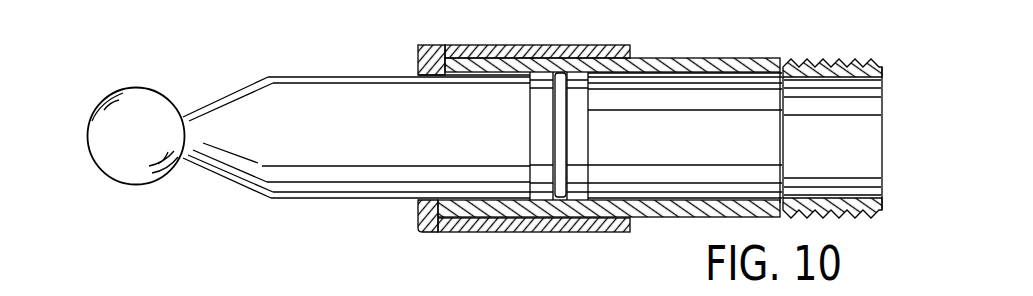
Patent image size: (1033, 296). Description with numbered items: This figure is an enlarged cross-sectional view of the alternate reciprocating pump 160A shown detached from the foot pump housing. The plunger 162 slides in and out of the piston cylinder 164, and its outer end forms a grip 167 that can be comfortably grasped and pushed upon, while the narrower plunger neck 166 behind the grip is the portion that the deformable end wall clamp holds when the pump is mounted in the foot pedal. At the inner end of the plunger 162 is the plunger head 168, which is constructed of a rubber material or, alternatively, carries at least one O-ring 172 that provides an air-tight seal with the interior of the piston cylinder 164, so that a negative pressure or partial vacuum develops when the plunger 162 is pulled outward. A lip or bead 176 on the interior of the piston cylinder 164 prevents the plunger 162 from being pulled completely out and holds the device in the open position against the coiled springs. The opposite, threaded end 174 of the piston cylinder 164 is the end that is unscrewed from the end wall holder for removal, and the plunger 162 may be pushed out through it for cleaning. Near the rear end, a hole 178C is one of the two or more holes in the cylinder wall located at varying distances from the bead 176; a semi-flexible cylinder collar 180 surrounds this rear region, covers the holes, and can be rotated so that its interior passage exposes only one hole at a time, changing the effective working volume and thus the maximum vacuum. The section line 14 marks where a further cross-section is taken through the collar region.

The alternate reciprocating pump 160A is at (306, 31).
The plunger 162 is at (285, 94).
The plunger neck 166 is at (185, 118).
The grip 167 is at (140, 95).
The plunger head 168 is at (587, 72).
The O-ring 172 is at (576, 232).
The threaded end 174 is at (832, 65).
The lip or bead 176 is at (427, 72).
The hole 178C is at (510, 208).
The cylinder collar 180 is at (447, 232).
The piston cylinder 164 is at (723, 63).
The section line 14- 14 is at (523, 37).